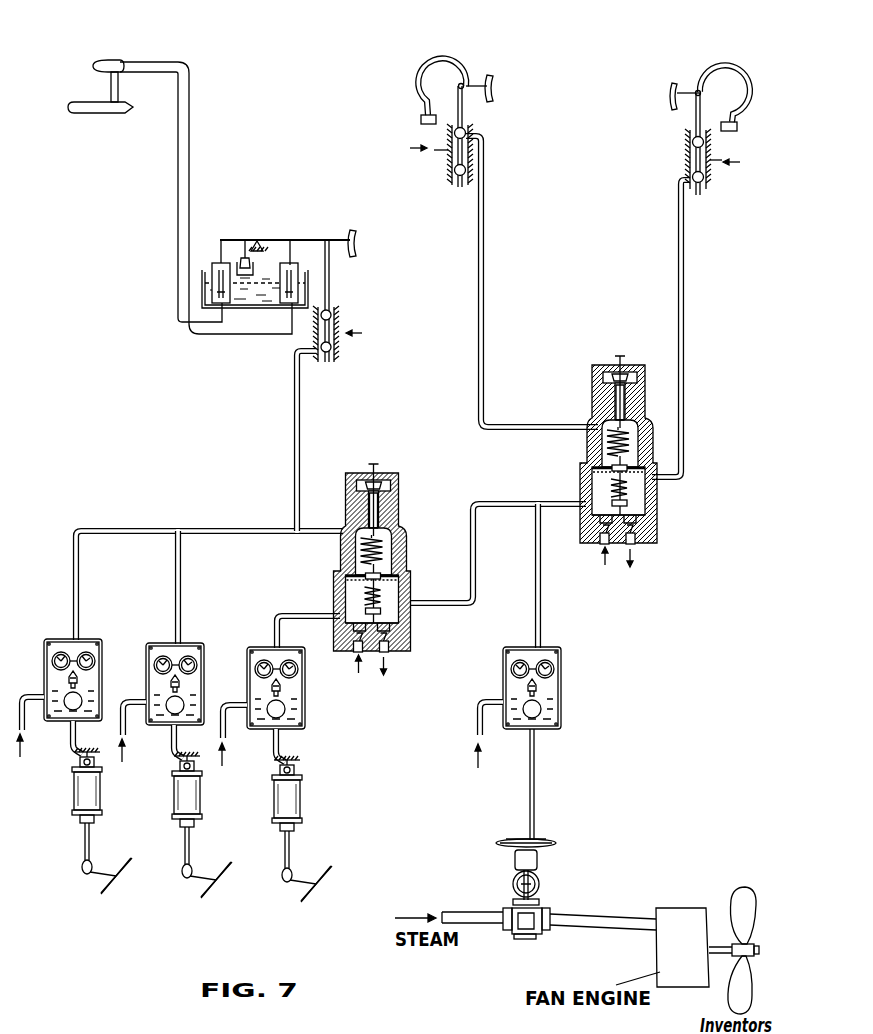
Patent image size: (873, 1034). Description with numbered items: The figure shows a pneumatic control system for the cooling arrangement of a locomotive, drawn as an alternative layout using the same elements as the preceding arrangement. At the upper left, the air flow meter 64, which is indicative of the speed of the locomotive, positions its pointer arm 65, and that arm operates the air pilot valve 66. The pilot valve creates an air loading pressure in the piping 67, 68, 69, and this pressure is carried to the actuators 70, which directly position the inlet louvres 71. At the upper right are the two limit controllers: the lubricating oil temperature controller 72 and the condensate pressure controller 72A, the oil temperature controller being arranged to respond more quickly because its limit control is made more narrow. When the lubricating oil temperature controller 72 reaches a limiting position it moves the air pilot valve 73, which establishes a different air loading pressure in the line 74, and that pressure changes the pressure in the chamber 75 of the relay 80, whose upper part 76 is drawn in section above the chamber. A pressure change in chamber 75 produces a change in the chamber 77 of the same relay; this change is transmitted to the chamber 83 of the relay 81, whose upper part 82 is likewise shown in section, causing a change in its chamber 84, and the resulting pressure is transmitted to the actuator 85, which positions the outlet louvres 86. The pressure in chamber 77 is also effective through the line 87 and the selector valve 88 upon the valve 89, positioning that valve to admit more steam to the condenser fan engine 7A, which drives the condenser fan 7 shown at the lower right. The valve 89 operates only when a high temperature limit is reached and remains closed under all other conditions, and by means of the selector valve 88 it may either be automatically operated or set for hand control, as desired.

The condenser fan 7 is at (742, 887).
The condenser fan engine 7A is at (669, 912).
The air flow meter 64 is at (210, 255).
The pointer arm 65 is at (316, 240).
The air pilot valve 66 is at (367, 365).
The piping 67 is at (300, 435).
The piping 68 is at (157, 529).
The piping 69 is at (181, 622).
The actuator 70 is at (100, 788).
The inlet louvre 71 is at (110, 890).
The lubricating oil temperature controller 72 is at (708, 63).
The condensate pressure controller 72A is at (460, 62).
The air pilot valve 73 is at (743, 193).
The line 74 is at (684, 275).
The chamber 75 is at (595, 475).
The spring chamber 76 is at (600, 452).
The chamber 77 is at (632, 512).
The relay 80 is at (619, 461).
The relay 81 is at (369, 569).
The spring chamber 82 is at (390, 565).
The chamber 83 is at (400, 595).
The chamber 84 is at (388, 623).
The actuator 85 is at (302, 794).
The outlet louvre 86 is at (310, 897).
The line 87 is at (540, 602).
The selector valve 88 is at (562, 686).
The valve 89 is at (538, 860).